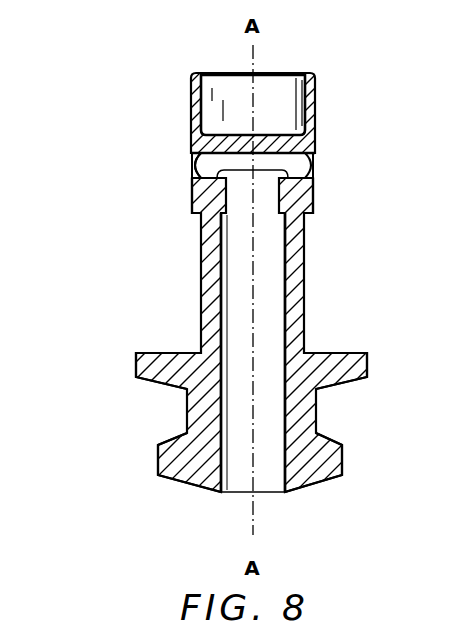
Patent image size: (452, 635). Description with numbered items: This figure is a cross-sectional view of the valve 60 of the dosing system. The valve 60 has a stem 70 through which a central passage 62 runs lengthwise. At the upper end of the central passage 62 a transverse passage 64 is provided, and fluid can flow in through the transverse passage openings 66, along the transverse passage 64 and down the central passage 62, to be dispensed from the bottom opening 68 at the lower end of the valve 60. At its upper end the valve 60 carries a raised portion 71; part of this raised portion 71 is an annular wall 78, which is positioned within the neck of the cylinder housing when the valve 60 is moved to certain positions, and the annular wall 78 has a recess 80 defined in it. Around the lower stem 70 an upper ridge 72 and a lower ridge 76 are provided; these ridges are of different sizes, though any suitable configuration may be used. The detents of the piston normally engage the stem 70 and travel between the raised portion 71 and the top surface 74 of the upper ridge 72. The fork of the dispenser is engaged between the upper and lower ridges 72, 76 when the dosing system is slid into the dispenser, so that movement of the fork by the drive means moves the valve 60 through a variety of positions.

The valve 60 is at (334, 243).
The central passage 62 is at (270, 358).
The transverse passage 64 is at (297, 156).
The transverse passage openings 66 is at (192, 160).
The bottom opening 68 is at (268, 480).
The stem 70 is at (294, 317).
The raised portion 71 is at (192, 207).
The upper ridge 72 is at (148, 363).
The top surface 74 is at (176, 353).
The lower ridge 76 is at (178, 452).
The annular wall 78 is at (317, 122).
The recess 80 is at (281, 91).